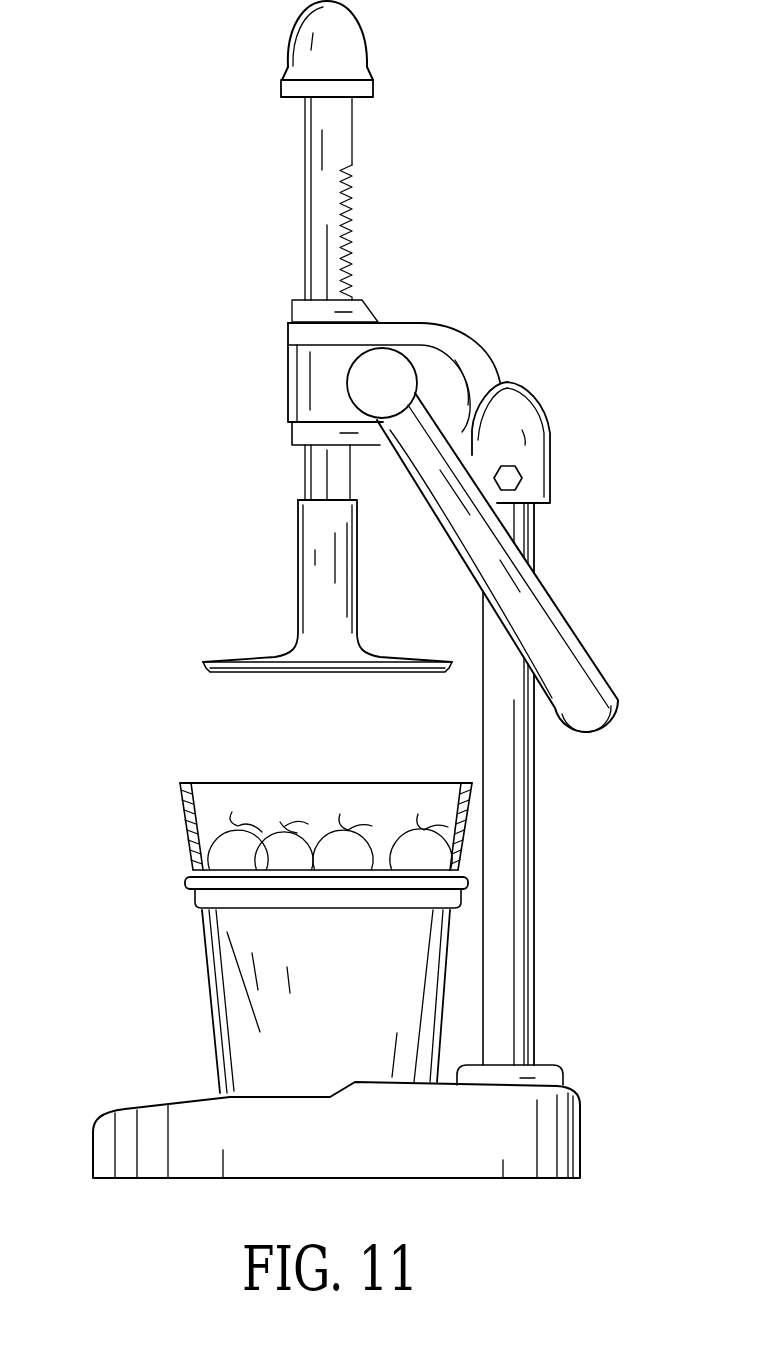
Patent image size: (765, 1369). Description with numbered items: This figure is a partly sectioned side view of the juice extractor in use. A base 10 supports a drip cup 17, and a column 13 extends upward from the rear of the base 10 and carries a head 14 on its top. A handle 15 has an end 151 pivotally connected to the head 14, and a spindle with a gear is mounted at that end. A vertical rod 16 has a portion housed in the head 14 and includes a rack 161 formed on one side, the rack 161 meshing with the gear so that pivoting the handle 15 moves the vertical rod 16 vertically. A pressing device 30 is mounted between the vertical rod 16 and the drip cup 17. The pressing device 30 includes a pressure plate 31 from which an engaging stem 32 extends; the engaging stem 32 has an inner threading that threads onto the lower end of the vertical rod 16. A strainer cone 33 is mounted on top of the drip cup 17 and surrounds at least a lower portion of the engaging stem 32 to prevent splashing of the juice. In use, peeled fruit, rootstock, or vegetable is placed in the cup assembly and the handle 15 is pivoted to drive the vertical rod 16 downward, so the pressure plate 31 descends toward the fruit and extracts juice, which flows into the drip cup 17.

The base 10 is at (482, 1167).
The column 13 is at (517, 873).
The head 14 is at (320, 391).
The handle 15 is at (560, 637).
The vertical rod 16 is at (320, 183).
The drip cup 17 is at (227, 1003).
The pressing device 30 is at (188, 748).
The pressure plate 31 is at (240, 662).
The engaging stem 32 is at (318, 533).
The strainer cone 33 is at (188, 848).
The end 151 is at (380, 385).
The rack 161 is at (348, 217).